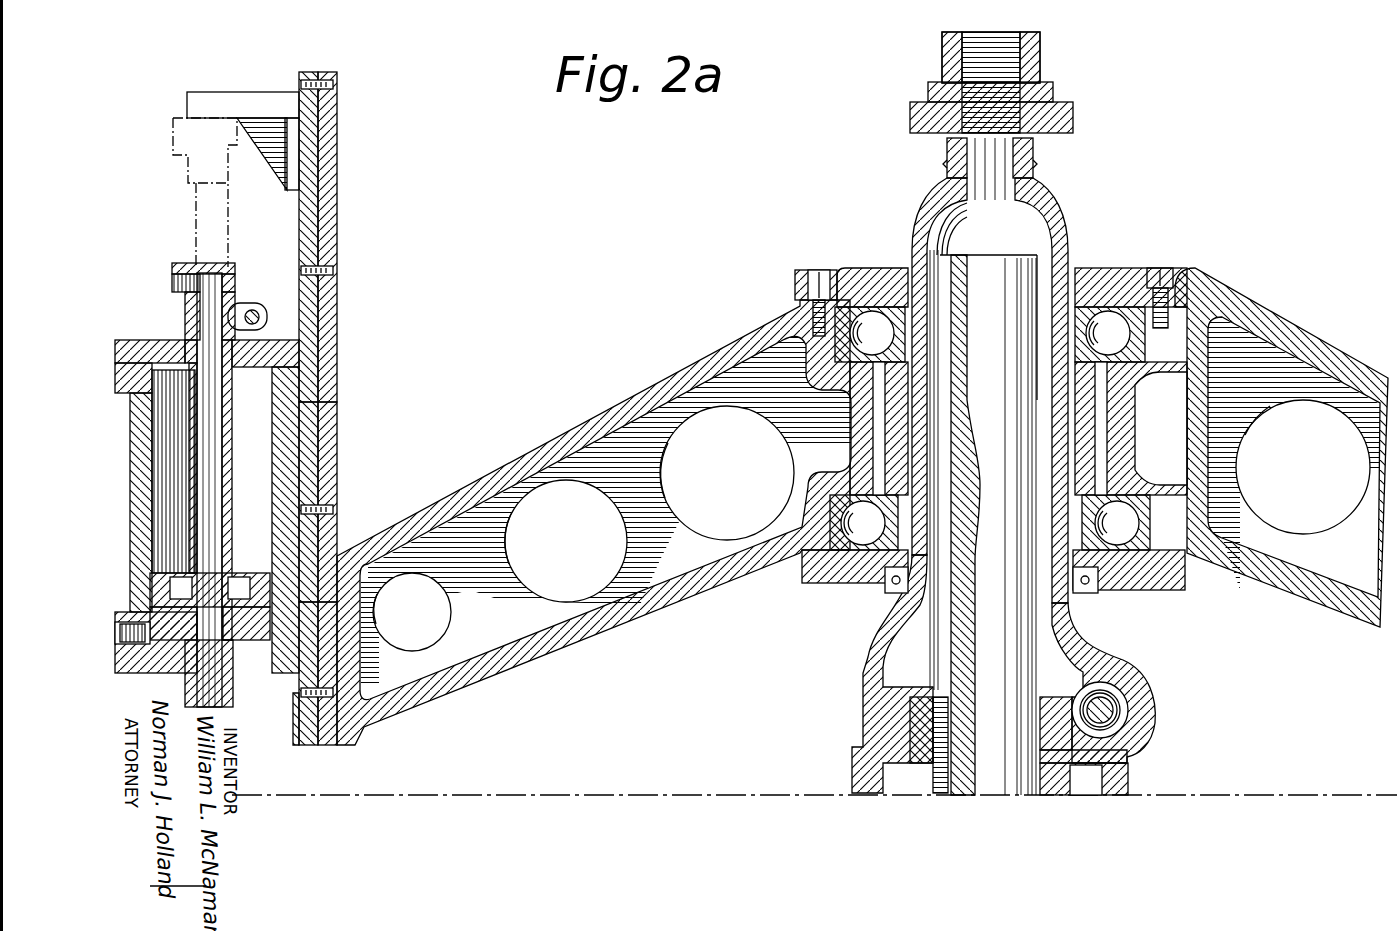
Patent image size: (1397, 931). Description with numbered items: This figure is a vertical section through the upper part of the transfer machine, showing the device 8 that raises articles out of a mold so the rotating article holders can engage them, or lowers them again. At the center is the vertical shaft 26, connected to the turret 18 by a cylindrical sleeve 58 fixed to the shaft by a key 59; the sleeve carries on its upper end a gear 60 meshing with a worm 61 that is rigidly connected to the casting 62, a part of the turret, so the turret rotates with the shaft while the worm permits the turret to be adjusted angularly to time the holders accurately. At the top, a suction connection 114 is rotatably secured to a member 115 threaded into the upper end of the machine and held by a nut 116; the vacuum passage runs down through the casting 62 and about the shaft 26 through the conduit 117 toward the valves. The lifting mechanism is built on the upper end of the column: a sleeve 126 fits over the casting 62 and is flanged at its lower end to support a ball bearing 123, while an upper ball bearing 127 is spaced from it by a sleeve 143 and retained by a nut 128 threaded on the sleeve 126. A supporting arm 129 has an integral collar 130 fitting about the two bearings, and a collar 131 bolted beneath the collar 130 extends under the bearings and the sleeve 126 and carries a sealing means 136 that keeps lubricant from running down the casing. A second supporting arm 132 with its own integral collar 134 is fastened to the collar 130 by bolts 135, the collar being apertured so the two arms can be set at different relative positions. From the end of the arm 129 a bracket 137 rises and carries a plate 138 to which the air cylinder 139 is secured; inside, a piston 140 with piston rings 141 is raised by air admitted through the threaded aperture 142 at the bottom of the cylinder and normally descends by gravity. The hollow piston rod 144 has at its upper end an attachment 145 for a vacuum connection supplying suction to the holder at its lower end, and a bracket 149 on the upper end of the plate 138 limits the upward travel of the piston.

The device 8 is at (353, 407).
The turret 18 is at (1132, 791).
The vertical shaft 26 is at (995, 655).
The cylindrical sleeve 58 is at (1100, 760).
The key 59 is at (942, 795).
The gear 60 is at (1100, 658).
The worm 61 is at (1125, 690).
The casting 62 is at (1060, 216).
The suction connection 114 is at (1041, 50).
The member 115 is at (1034, 157).
The nut 116 is at (1068, 106).
The conduit 117 is at (1085, 795).
The ball bearing 123 is at (1150, 530).
The sleeve 126 is at (1112, 330).
The ball bearing 127 is at (1152, 270).
The nut 128 is at (1090, 282).
The supporting arm 129 is at (576, 437).
The collar 130 is at (1128, 425).
The collar 131 is at (846, 576).
The second supporting arm 132 is at (1295, 322).
The collar 134 is at (840, 270).
The bolts 135 is at (806, 270).
The sealing means 136 is at (1122, 592).
The bracket 137 is at (330, 318).
The plate 138 is at (312, 206).
The air cylinder 139 is at (140, 345).
The piston 140 is at (268, 580).
The piston rings 141 is at (337, 527).
The threaded aperture 142 is at (135, 655).
The sleeve 143 is at (1090, 455).
The piston rod 144 is at (225, 470).
The vacuum connection attachment 145 is at (208, 265).
The bracket 149 is at (243, 96).